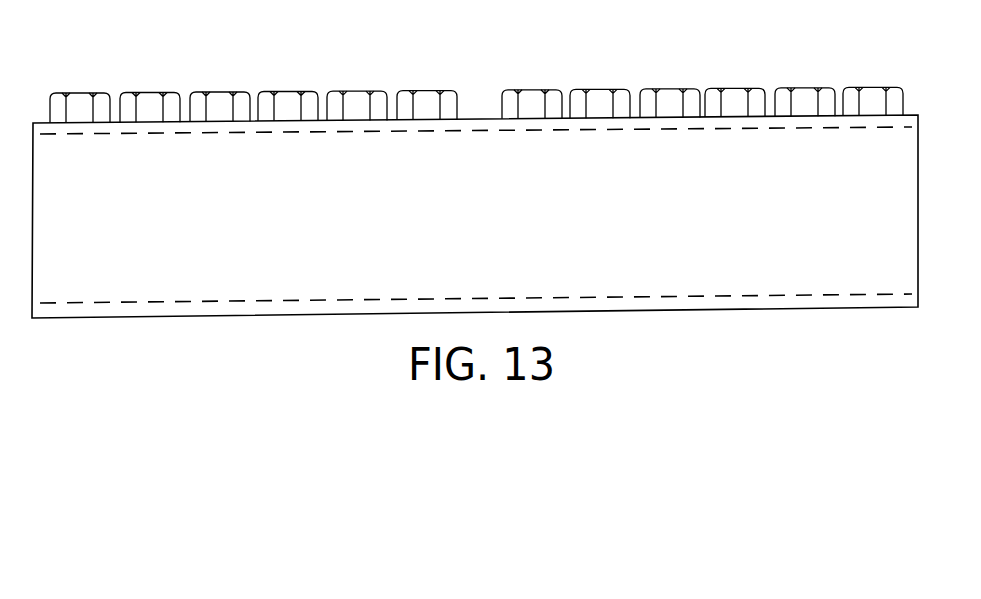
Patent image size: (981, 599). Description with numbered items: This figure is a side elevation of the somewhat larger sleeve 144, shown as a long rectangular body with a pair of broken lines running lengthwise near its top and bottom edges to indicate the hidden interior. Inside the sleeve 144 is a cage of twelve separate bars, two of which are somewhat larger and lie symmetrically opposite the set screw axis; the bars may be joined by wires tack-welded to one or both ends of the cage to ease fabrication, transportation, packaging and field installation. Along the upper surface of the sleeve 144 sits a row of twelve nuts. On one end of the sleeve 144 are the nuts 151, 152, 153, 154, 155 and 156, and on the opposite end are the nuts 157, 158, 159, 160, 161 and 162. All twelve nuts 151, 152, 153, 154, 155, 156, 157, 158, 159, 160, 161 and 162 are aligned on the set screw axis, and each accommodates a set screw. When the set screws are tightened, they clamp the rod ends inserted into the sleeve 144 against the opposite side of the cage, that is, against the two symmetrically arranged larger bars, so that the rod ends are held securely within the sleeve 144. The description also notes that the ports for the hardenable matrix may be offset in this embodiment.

The sleeve 144 is at (905, 228).
The nut 151 is at (98, 92).
The nut 152 is at (173, 92).
The nut 153 is at (238, 92).
The nut 154 is at (313, 60).
The nut 155 is at (368, 92).
The nut 156 is at (445, 92).
The nut 157 is at (543, 92).
The nut 158 is at (607, 92).
The nut 159 is at (660, 88).
The nut 160 is at (740, 87).
The nut 161 is at (807, 87).
The nut 162 is at (897, 85).